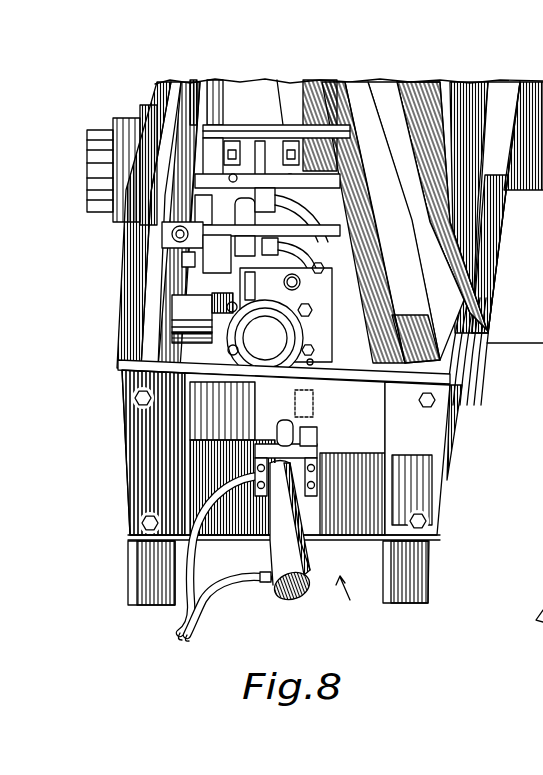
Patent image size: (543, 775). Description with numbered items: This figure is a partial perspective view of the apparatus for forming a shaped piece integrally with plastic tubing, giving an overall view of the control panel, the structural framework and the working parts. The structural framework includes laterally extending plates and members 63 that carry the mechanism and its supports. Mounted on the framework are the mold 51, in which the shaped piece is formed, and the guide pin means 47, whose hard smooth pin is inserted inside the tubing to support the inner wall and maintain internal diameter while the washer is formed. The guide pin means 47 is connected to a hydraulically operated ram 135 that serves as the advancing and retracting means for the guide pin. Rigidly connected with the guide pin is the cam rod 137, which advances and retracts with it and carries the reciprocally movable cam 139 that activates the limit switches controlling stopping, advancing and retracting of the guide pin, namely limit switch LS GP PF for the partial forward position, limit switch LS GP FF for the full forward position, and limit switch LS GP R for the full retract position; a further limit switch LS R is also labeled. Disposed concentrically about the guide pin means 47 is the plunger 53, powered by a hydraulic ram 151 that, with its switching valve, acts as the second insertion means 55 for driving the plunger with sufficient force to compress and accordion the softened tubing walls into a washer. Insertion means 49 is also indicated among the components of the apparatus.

The guide pin means 47 is at (253, 178).
The insertion means 49 is at (362, 628).
The mold 51 is at (290, 178).
The plunger 53 is at (268, 186).
The second insertion means 55 is at (255, 225).
The laterally extending plates and members 63 is at (193, 440).
The hydraulically operated ram 135 is at (280, 547).
The cam rod 137 is at (290, 445).
The reciprocally movable cam 139 is at (247, 328).
The hydraulic ram 151 is at (262, 300).
The limit switch R LS R is at (236, 237).
The limit switch for guide pin full forward position LS GP FF is at (305, 363).
The limit switch for guide pin partial forward position LS GP PF is at (290, 402).
The limit switch for guide pin full retract position LS GP R is at (290, 445).